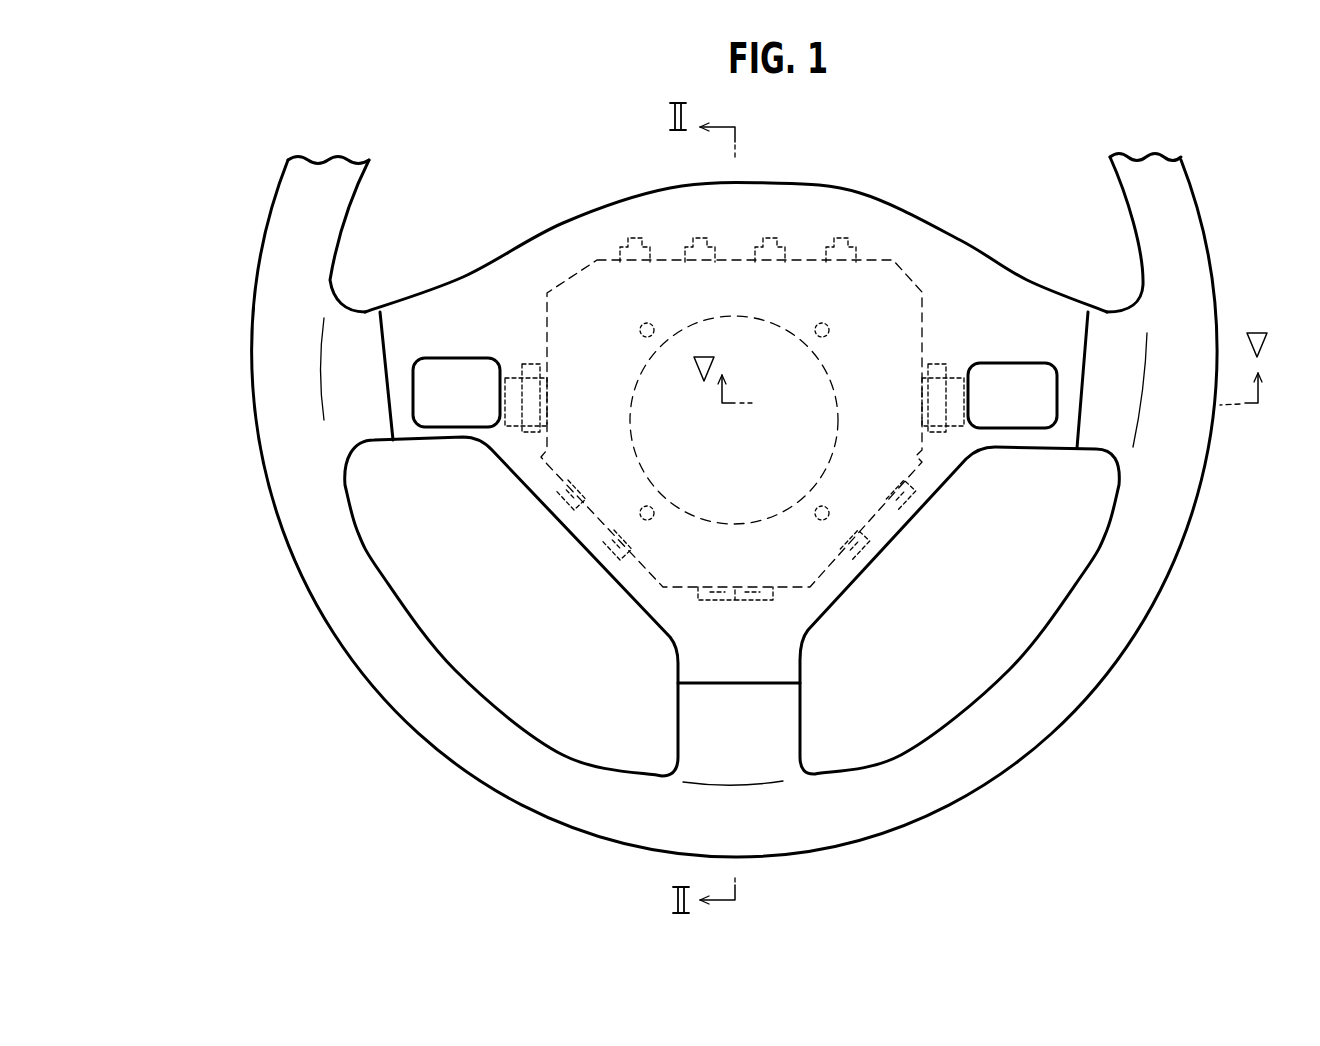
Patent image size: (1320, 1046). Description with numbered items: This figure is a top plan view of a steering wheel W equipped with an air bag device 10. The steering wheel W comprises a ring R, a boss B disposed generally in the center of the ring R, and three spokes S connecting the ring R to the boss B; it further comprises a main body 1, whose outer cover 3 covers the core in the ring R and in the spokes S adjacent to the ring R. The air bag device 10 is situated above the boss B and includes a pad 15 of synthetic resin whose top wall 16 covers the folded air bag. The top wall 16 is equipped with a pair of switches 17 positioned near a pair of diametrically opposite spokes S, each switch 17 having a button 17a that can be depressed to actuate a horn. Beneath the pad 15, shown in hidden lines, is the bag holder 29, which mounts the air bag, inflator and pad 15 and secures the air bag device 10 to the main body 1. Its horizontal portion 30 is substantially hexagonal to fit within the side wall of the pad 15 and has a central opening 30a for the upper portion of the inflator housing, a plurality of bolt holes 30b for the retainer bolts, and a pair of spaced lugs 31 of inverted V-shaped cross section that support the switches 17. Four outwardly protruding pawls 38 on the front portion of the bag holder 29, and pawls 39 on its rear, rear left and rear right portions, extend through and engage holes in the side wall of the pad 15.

The main body 1 is at (424, 722).
The outer cover 3 is at (300, 455).
The air bag device 10 is at (956, 221).
The pad 15 is at (607, 220).
The top wall 16 is at (596, 295).
The switch 17 is at (754, 321).
The button 17a is at (447, 375).
The bag holder 29 is at (801, 222).
The horizontal portion 30 is at (905, 263).
The central opening 30a is at (727, 317).
The bolt hole 30b is at (828, 333).
The lug 31 is at (532, 363).
The pawl 38 is at (636, 236).
The pawl 39 is at (572, 500).
The boss B is at (862, 181).
The ring R is at (1088, 665).
The spoke S is at (390, 468).
The steering wheel W is at (1218, 182).